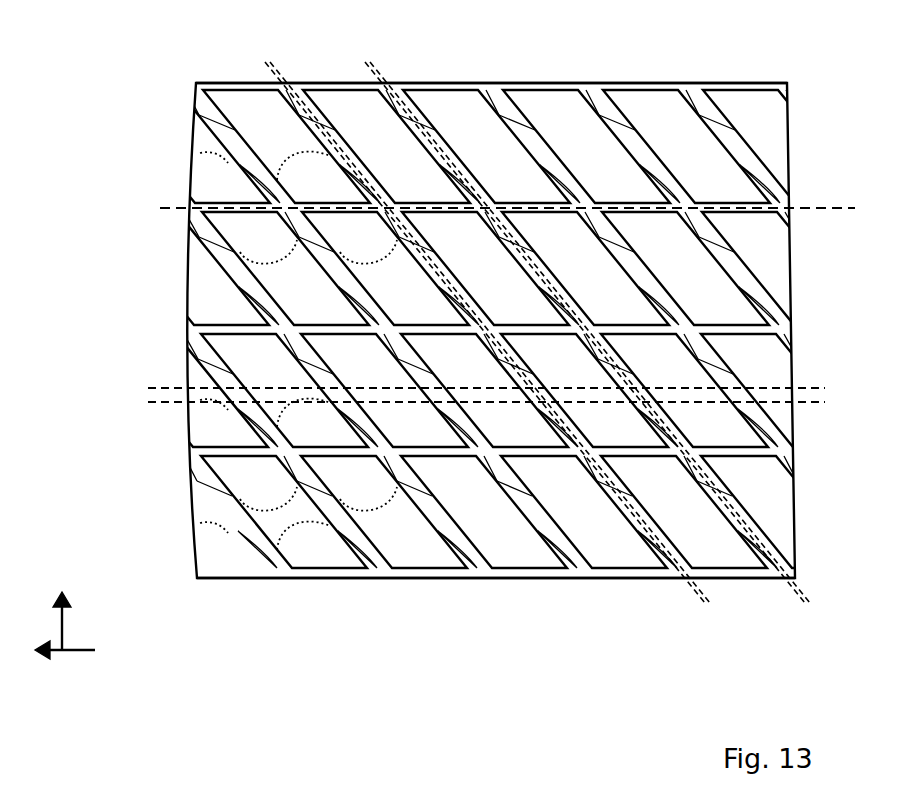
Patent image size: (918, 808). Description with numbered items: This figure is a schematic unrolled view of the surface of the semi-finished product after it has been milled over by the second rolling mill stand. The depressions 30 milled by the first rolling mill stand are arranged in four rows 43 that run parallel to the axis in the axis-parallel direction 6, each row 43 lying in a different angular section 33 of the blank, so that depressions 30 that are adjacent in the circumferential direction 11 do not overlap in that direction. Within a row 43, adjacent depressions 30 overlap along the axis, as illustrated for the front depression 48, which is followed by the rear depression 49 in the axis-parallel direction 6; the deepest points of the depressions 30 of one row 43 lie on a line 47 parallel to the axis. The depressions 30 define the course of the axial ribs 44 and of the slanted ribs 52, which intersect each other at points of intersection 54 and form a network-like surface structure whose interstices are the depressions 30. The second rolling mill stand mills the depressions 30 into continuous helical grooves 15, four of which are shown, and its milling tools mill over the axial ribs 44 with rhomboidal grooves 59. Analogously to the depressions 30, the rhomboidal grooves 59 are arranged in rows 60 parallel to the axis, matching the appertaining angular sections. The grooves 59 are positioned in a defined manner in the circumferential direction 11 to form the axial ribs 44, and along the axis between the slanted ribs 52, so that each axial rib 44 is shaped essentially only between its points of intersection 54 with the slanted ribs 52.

The axis-parallel direction 6 is at (78, 653).
The circumferential direction 11 is at (58, 634).
The helical groove 15 is at (70, 97).
The depression 30 is at (228, 143).
The angular section 33 is at (120, 573).
The row 43 is at (150, 484).
The axial rib 44 is at (745, 402).
The line 47 is at (808, 208).
The front depression 48 is at (375, 518).
The rear depression 49 is at (272, 525).
The slanted rib 52 is at (608, 478).
The point of intersection 54 is at (542, 402).
The rhomboidal groove 59 is at (700, 359).
The row of grooves 60 is at (150, 515).